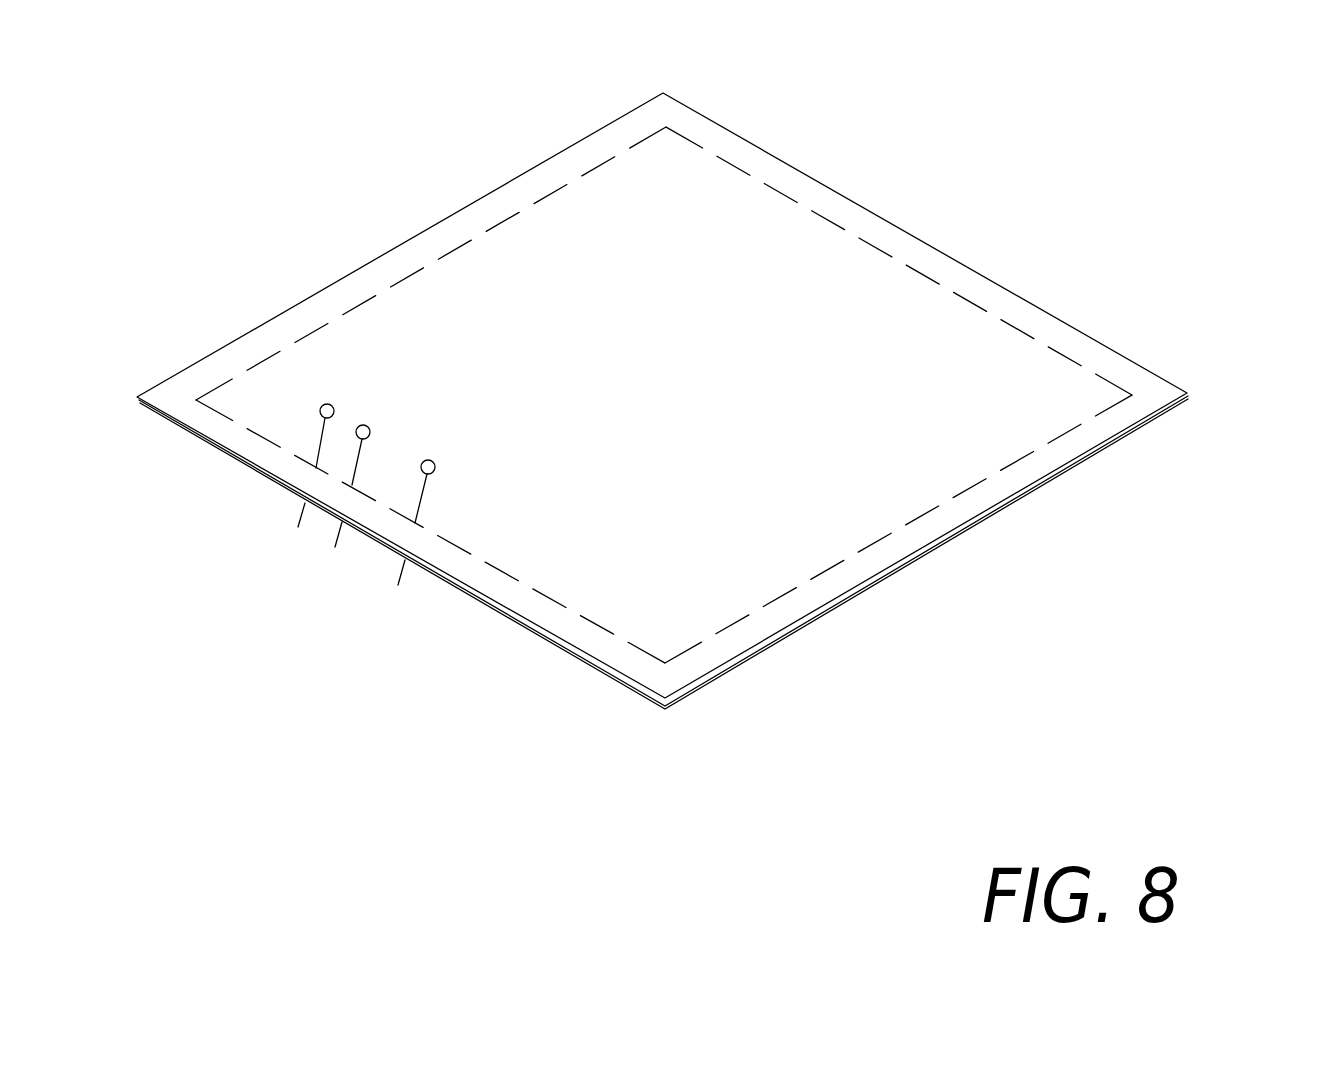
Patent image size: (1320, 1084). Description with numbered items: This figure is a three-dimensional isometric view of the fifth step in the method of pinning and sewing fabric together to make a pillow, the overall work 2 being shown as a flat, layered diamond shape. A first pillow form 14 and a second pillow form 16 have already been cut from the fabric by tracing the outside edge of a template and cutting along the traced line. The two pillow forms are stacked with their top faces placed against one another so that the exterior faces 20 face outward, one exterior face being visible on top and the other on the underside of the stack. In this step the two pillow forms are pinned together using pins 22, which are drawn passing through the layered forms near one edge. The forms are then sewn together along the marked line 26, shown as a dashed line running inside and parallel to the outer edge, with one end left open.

The panel assembly 2 is at (166, 140).
The first pillow form 14 is at (1043, 490).
The second pillow form 16 is at (1190, 393).
The exterior faces 20 is at (612, 366).
The pins 22 is at (334, 408).
The marked line 26 is at (1078, 365).